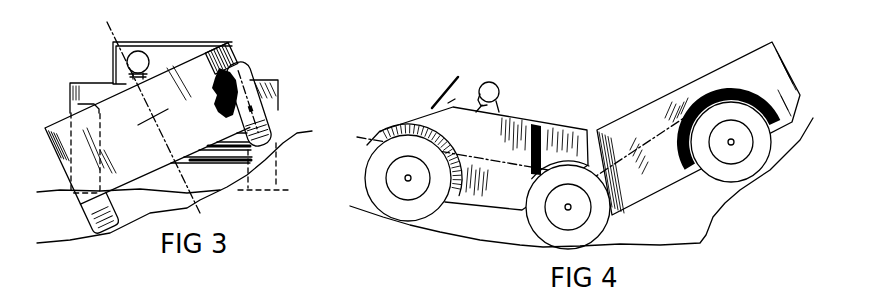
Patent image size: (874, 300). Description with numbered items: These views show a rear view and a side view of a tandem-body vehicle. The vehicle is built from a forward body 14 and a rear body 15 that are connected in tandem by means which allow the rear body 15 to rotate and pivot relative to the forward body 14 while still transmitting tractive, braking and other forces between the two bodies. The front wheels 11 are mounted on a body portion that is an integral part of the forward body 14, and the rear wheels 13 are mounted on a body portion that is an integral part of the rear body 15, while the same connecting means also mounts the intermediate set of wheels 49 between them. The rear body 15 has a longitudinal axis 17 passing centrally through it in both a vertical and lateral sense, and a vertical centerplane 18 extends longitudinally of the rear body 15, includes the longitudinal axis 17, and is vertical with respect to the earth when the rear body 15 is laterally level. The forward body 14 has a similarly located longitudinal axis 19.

In FIG. 4, the front wheels 11 is at (365, 182).
In FIG. 3, the rear wheels 13 is at (247, 72).
In FIG. 4, the rear wheels 13 is at (722, 183).
In FIG. 3, the forward body 14 is at (96, 83).
In FIG. 4, the forward body 14 is at (512, 117).
In FIG. 3, the rear body 15 is at (227, 40).
In FIG. 4, the rear body 15 is at (700, 83).
In FIG. 3, the longitudinal axis 17 is at (158, 117).
In FIG. 4, the longitudinal axis 17 is at (670, 137).
In FIG. 3, the vertical centerplane 18 is at (113, 32).
In FIG. 4, the longitudinal axis 19 is at (462, 155).
In FIG. 3, the intermediate set of wheels 49 is at (77, 112).
In FIG. 4, the intermediate set of wheels 49 is at (610, 220).